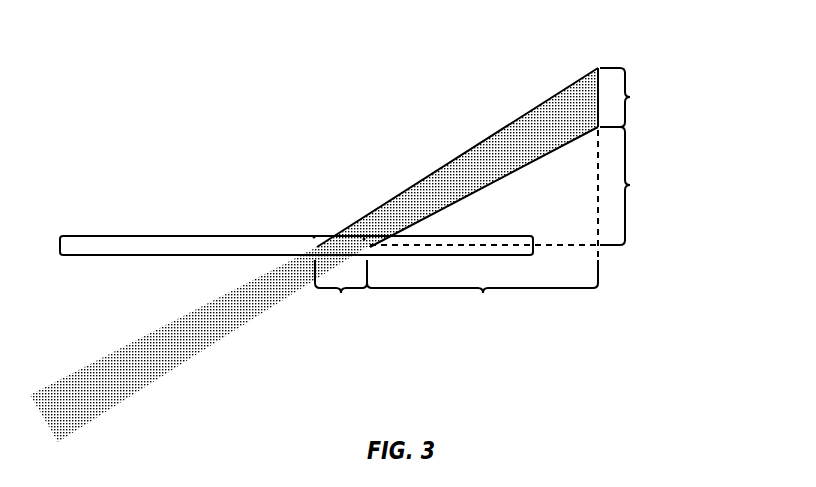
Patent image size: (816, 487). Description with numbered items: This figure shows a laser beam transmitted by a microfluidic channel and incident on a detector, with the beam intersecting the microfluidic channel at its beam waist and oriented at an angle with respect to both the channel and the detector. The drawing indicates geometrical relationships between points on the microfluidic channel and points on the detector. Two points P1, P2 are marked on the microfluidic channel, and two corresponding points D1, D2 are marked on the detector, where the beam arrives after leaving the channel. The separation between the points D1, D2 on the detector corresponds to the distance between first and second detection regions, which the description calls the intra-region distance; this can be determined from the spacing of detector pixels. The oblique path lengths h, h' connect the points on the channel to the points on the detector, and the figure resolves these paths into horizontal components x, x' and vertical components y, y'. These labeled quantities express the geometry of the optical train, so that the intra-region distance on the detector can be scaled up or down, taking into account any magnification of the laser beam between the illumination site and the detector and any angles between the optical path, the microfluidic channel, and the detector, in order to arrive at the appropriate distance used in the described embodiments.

The first detection position of reflected beam D1 is at (598, 68).
The second detection position of reflected beam D2 is at (600, 127).
The first reflection point on plate P1 is at (313, 236).
The second reflection point on plate P2 is at (363, 238).
The path length of beam from P2 to D2 h is at (484, 187).
The path length of beam from P1 to D1 h' is at (457, 157).
The horizontal distance from P2 to detector x is at (482, 301).
The horizontal offset between P1 and P2 x' is at (341, 301).
The vertical distance from plate to D2 y is at (635, 186).
The vertical offset between D1 and D2 y' is at (644, 97).